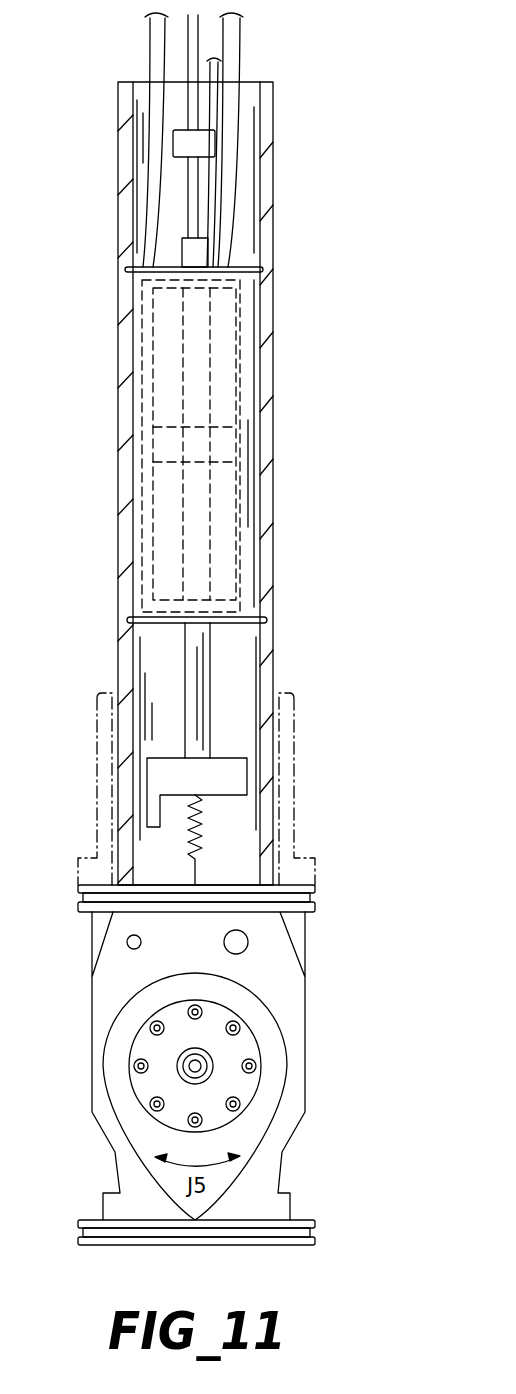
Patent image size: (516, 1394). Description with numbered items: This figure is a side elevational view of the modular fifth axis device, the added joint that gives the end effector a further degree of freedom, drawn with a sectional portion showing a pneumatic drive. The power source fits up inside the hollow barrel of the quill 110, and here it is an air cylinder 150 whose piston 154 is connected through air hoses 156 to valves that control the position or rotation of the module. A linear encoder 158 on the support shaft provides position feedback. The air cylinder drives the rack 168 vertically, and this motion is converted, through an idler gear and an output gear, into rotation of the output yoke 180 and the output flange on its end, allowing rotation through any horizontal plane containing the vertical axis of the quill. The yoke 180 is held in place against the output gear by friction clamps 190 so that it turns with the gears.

The housing body 110 is at (97, 800).
The air cylinder 150 is at (243, 508).
The piston 154 is at (180, 442).
The air hoses 156 is at (243, 42).
The linear encoder 158 is at (183, 142).
The rack 168 is at (177, 833).
The output yoke 180 is at (293, 1203).
The friction clamps 190 is at (243, 1043).